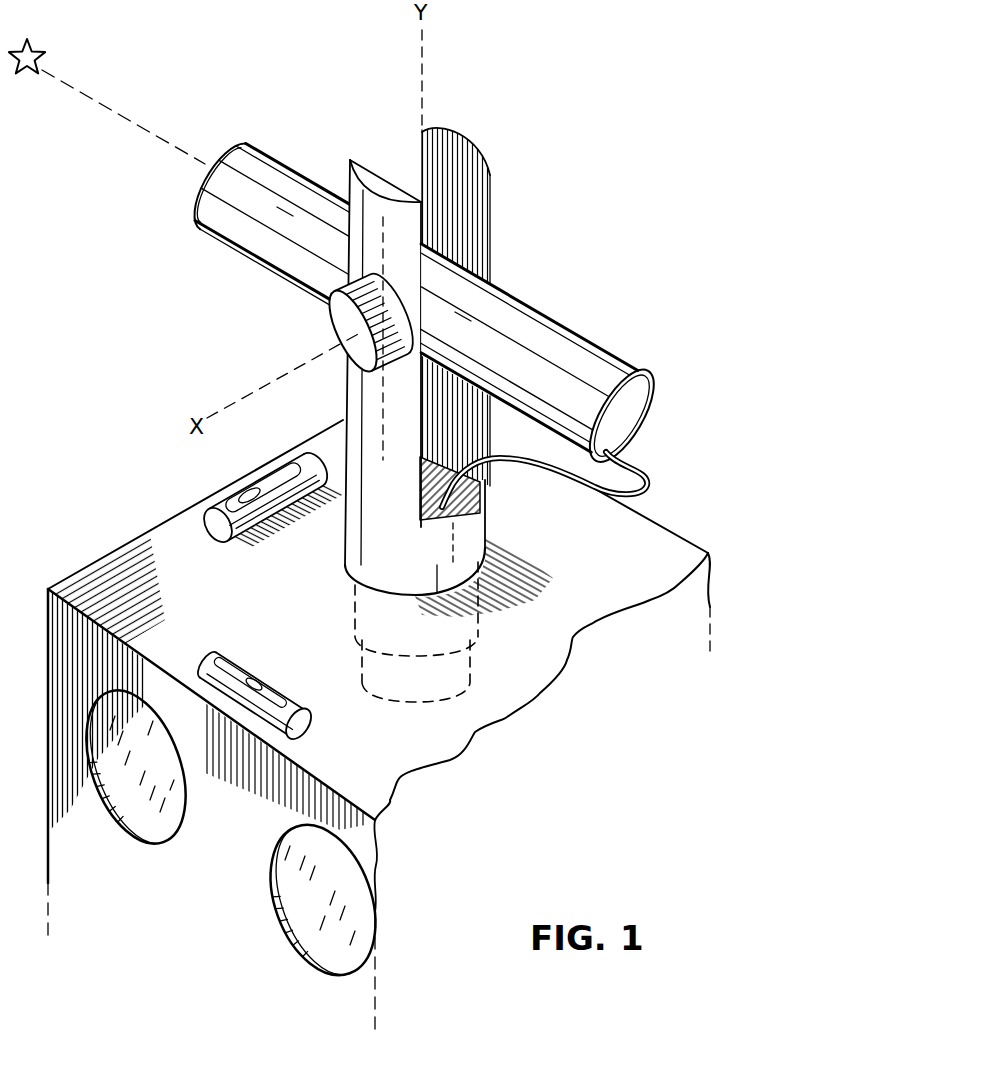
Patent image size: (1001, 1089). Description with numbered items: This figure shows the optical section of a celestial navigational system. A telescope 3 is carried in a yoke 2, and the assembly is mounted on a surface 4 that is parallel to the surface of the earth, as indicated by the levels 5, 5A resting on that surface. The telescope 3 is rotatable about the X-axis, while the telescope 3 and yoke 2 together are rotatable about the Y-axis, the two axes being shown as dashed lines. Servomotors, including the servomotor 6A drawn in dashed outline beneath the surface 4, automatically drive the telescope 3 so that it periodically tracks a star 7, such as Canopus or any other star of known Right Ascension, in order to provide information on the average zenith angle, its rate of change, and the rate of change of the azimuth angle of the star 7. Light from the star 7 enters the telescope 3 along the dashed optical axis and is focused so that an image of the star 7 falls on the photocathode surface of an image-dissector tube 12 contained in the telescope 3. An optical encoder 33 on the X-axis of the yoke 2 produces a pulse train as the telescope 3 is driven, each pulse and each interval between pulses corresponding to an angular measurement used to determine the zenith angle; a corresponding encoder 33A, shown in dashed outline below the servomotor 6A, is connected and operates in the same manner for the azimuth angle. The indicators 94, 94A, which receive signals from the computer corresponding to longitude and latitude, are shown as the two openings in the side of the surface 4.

The star 7 is at (40, 46).
The telescope 3 is at (281, 157).
The yoke 2 is at (489, 150).
The image-dissector tube 12 is at (495, 392).
The optical encoder 33 is at (335, 322).
The level 5 is at (207, 517).
The surface 4 is at (93, 567).
The level 5A is at (252, 667).
The servomotor 6A is at (458, 623).
The optical encoder 33A is at (450, 685).
The indicator 94 is at (130, 792).
The indicator 94A is at (318, 918).